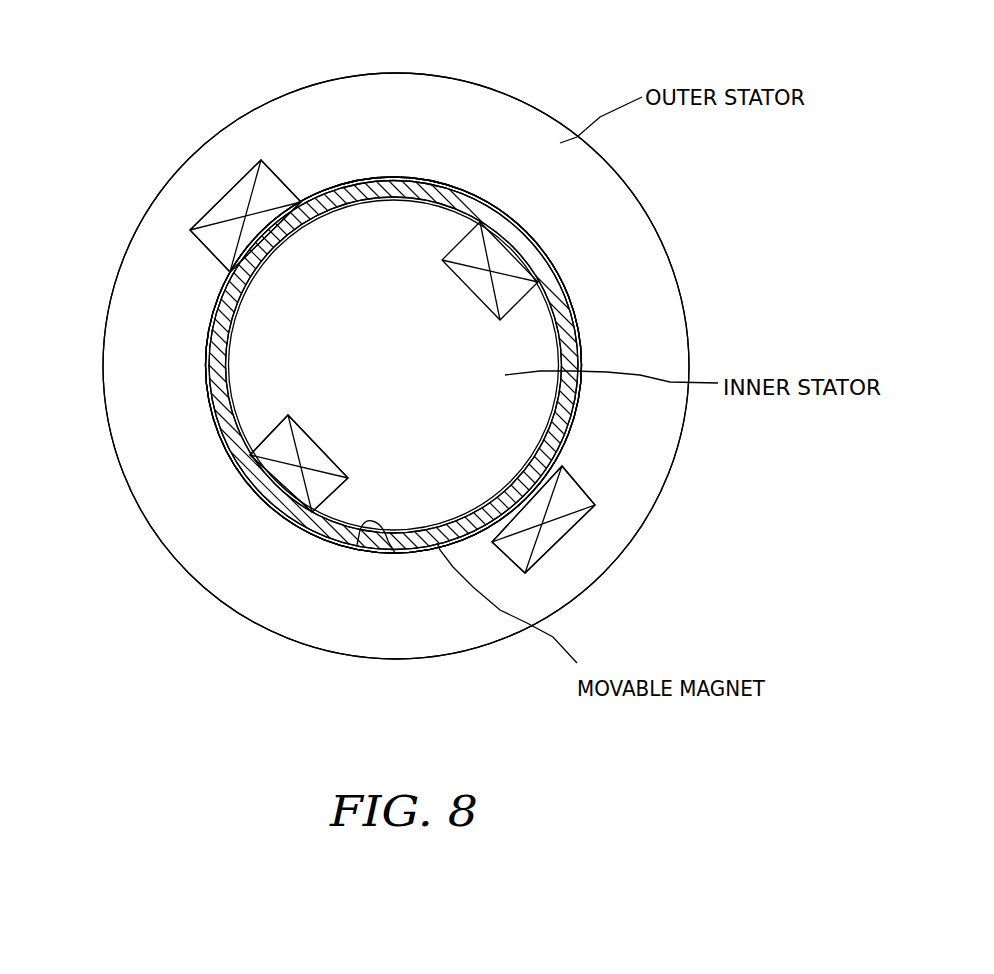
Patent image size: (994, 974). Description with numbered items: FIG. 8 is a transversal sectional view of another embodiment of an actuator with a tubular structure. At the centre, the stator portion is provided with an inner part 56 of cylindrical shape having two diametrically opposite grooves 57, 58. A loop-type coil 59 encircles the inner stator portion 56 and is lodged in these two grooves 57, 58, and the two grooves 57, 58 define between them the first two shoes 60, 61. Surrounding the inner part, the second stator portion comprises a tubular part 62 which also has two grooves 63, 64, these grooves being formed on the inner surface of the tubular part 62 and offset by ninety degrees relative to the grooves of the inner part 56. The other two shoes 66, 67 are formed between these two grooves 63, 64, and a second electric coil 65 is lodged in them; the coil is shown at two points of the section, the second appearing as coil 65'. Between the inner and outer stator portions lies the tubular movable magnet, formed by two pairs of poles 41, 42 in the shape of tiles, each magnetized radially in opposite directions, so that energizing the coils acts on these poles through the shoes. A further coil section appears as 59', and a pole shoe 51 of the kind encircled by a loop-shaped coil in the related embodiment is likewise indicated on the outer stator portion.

The pair of poles 41 is at (565, 303).
The pair of poles 42 is at (226, 296).
The pole shoe 51 is at (512, 220).
The inner part 56 is at (272, 292).
The groove 57 is at (560, 353).
The groove 58 is at (307, 423).
The loop-type coil 59 is at (402, 305).
The inner stator pole magnet 59' is at (402, 388).
The shoe 60 is at (395, 553).
The shoe 61 is at (433, 182).
The tubular part 62 is at (140, 433).
The groove 63 is at (238, 178).
The groove 64 is at (595, 505).
The second electric coil 65 is at (583, 529).
The coil pole 65' is at (279, 144).
The shoe 66 is at (570, 427).
The shoe 67 is at (132, 343).